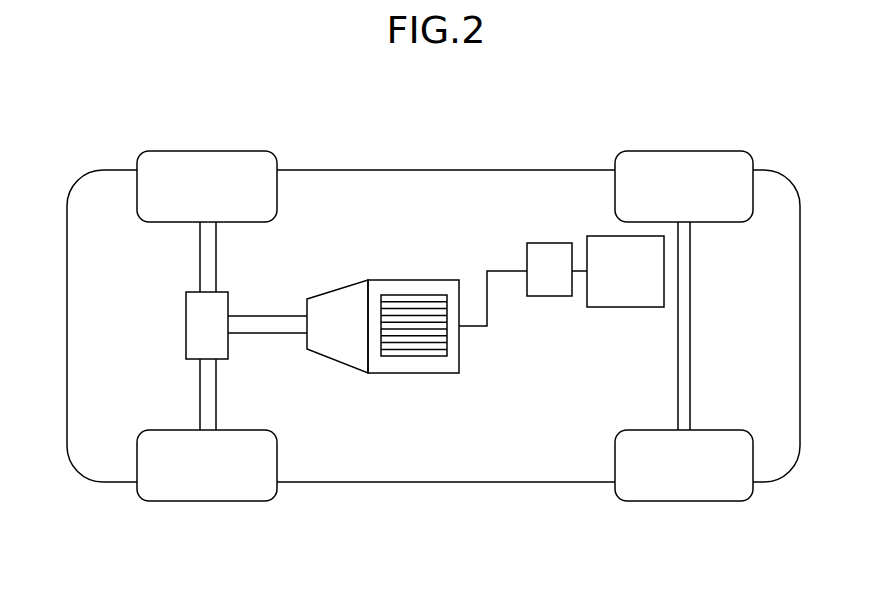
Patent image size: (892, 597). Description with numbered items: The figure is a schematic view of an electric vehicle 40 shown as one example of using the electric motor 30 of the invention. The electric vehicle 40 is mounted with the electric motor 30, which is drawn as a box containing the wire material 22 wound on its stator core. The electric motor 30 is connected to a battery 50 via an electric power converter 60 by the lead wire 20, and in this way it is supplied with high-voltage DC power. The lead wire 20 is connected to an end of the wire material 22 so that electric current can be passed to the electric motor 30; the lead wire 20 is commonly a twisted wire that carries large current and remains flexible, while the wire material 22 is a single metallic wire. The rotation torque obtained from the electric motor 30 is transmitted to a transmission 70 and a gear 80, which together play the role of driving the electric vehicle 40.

The electric vehicle 40 is at (429, 101).
The gear 80 is at (246, 325).
The transmission 70 is at (337, 326).
The electric motor 30 is at (427, 280).
The wire material 22 is at (418, 357).
The lead wire 20 is at (489, 313).
The electric power converter 60 is at (557, 269).
The battery 50 is at (625, 271).